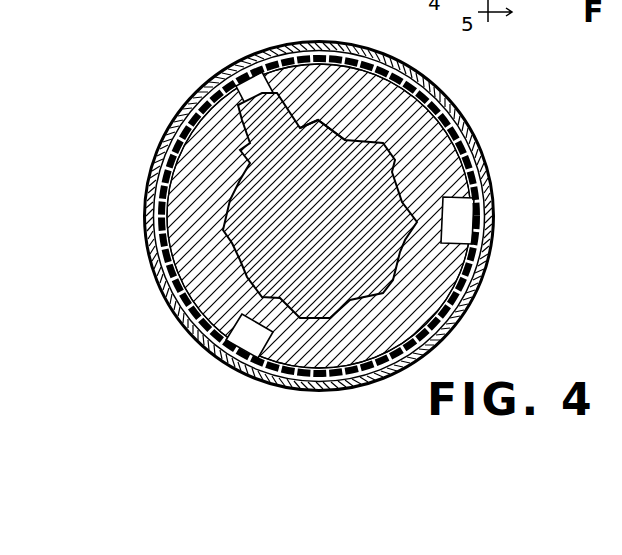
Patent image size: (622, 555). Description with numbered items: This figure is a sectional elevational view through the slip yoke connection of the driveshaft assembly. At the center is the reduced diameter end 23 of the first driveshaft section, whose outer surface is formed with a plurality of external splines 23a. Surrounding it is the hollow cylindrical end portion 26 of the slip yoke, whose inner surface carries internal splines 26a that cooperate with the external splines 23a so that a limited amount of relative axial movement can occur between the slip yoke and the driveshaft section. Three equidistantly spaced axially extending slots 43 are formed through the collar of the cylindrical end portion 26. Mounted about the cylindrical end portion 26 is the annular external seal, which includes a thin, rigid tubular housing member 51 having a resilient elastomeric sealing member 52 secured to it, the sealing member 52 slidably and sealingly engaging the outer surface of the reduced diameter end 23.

The reduced diameter end 23 is at (350, 143).
The external splines 23a is at (320, 120).
The hollow cylindrical end portion 26 is at (202, 270).
The internal splines 26a is at (200, 133).
The axially extending slots 43 is at (257, 78).
The housing member 51 is at (470, 128).
The resilient sealing member 52 is at (464, 166).